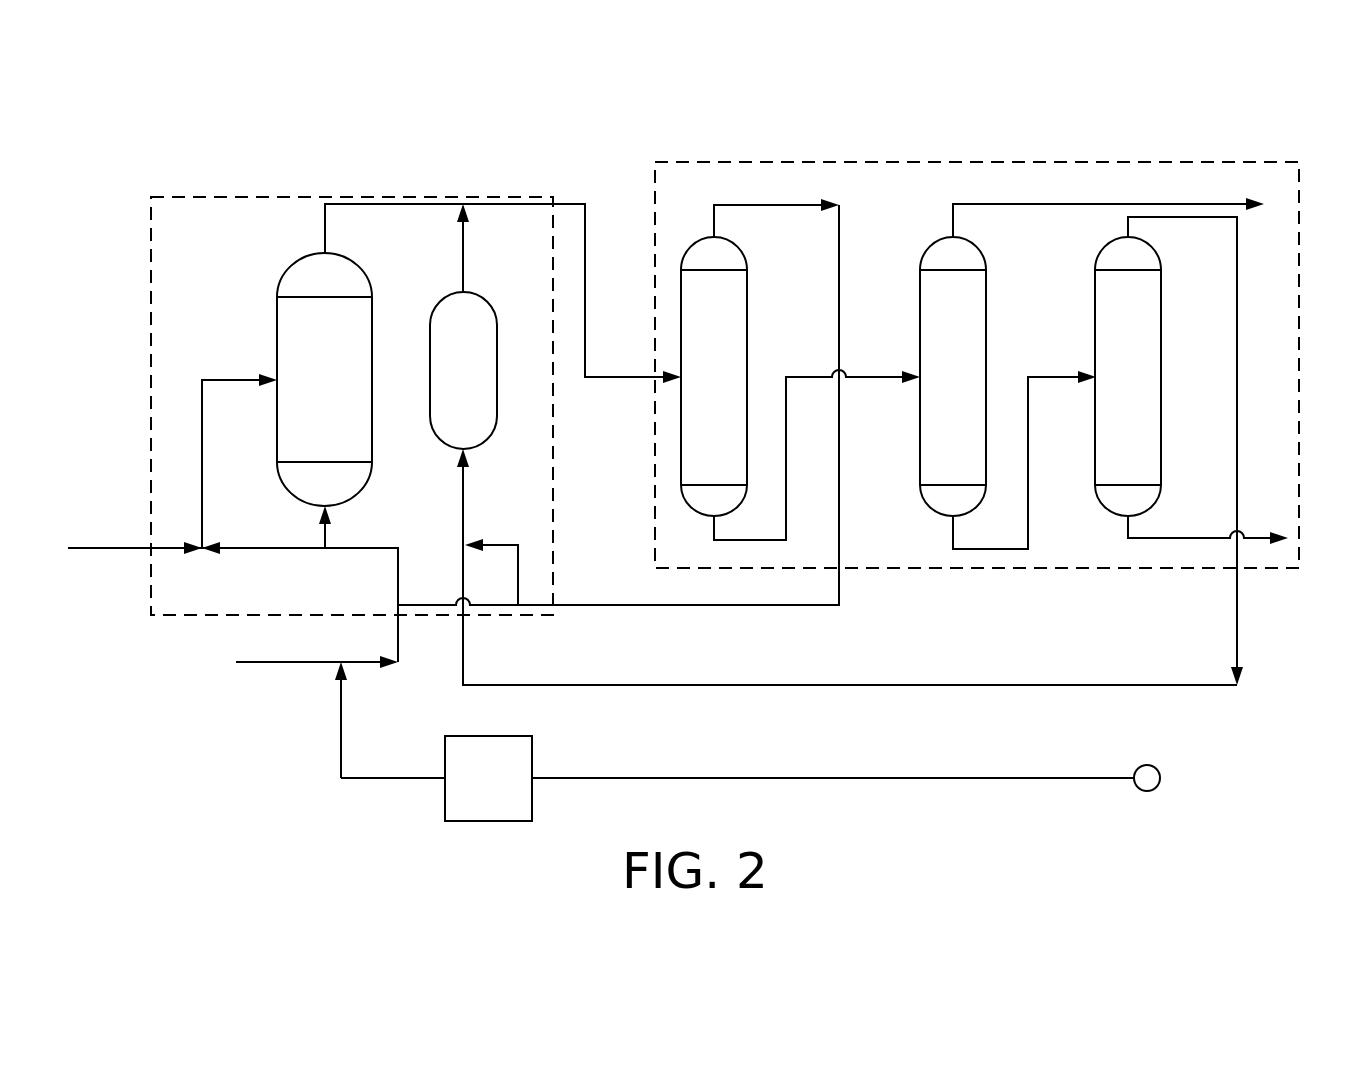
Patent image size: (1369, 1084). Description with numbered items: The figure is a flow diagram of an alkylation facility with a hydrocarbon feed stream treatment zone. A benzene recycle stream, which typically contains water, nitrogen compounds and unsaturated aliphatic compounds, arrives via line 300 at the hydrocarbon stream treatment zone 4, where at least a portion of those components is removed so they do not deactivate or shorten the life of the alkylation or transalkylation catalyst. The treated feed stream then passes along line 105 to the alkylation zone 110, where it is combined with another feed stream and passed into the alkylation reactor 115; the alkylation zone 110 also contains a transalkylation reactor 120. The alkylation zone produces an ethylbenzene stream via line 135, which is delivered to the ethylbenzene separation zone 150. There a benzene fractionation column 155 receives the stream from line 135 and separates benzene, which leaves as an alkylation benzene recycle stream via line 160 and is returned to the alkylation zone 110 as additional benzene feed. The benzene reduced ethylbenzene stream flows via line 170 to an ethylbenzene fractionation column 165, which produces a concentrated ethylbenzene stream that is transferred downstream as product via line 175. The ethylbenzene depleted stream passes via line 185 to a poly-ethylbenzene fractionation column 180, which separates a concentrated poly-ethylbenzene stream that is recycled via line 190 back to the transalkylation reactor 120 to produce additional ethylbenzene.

The alkylation zone 110 is at (172, 197).
The ethylbenzene separation zone 150 is at (1270, 162).
The alkylation reactor 115 is at (292, 262).
The transalkylation reactor 120 is at (447, 295).
The line 135 is at (511, 206).
The benzene fractionation column 155 is at (745, 252).
The line 160 is at (737, 205).
The line 170 is at (869, 377).
The ethylbenzene fractionation column 165 is at (980, 252).
The line 175 is at (1076, 204).
The line 185 is at (1040, 376).
The poly-ethylbenzene fractionation column 180 is at (1161, 281).
The line 190 is at (1053, 685).
The line 105 is at (340, 735).
The hydrocarbon stream treatment zone 4 is at (512, 737).
The line 300 is at (1050, 779).